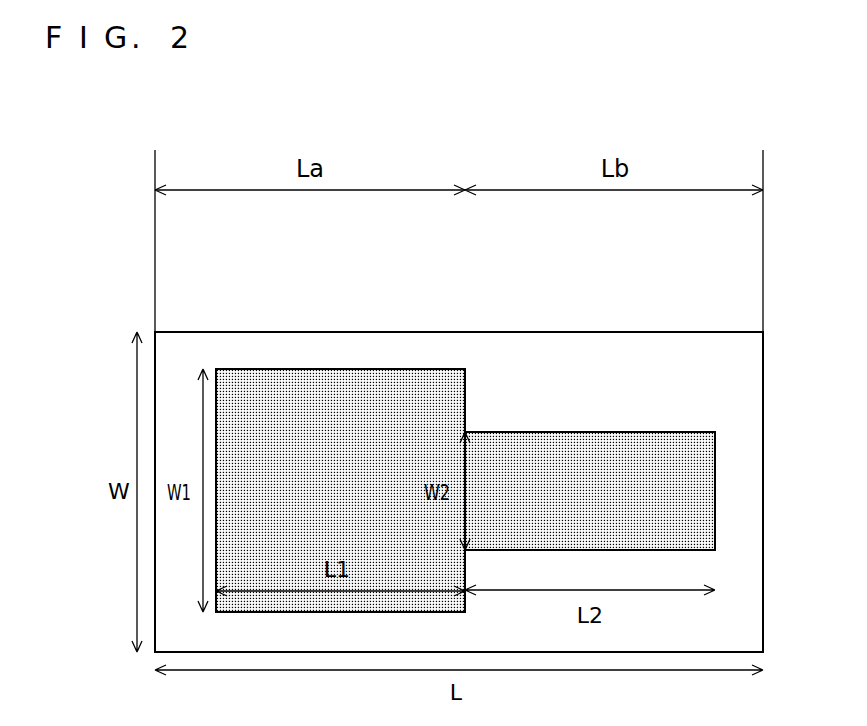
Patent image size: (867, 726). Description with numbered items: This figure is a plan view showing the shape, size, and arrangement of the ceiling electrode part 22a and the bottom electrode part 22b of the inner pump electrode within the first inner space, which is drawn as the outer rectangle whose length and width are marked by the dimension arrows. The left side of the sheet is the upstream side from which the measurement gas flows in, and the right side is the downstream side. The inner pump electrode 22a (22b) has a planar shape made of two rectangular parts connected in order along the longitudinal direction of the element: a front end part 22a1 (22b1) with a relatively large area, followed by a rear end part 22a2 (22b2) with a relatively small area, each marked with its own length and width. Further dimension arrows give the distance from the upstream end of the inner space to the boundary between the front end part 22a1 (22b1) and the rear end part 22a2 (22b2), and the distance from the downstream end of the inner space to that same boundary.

The ceiling electrode part 22a is at (465, 409).
The bottom electrode part 22b is at (633, 266).
The front end part 22a1 is at (340, 441).
The front end part 22b1 is at (342, 388).
The rear end part 22a2 is at (590, 410).
The rear end part 22b2 is at (568, 455).